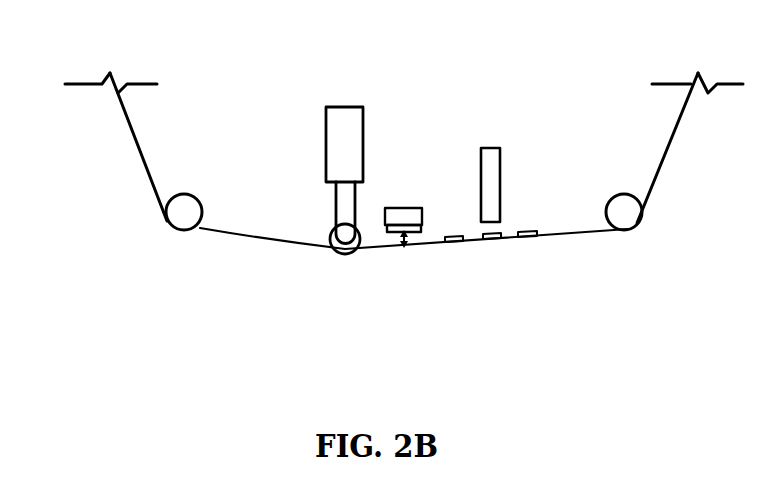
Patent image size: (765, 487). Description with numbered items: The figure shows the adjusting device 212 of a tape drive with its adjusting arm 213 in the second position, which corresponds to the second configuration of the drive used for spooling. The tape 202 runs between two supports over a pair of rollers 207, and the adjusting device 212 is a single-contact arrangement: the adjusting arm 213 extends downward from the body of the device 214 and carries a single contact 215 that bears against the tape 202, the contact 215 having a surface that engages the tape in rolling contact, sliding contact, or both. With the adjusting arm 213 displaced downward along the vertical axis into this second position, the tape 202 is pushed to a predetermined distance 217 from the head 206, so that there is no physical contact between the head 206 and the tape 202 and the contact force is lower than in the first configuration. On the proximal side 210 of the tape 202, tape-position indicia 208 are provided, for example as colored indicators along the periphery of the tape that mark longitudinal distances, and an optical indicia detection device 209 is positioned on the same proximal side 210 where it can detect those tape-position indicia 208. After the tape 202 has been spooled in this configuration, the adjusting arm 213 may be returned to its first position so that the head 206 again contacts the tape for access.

The tape 202 is at (127, 143).
The head 206 is at (386, 225).
The pulley 207 is at (170, 217).
The tape-position indicia 208 is at (453, 243).
The indicia detection device 209 is at (500, 157).
The proximal side 210 is at (547, 218).
The adjusting device 212 is at (297, 129).
The adjusting arm 213 is at (355, 200).
The actuator body 214 is at (363, 120).
The contact 215 is at (328, 244).
The predetermined distance 217 is at (423, 247).